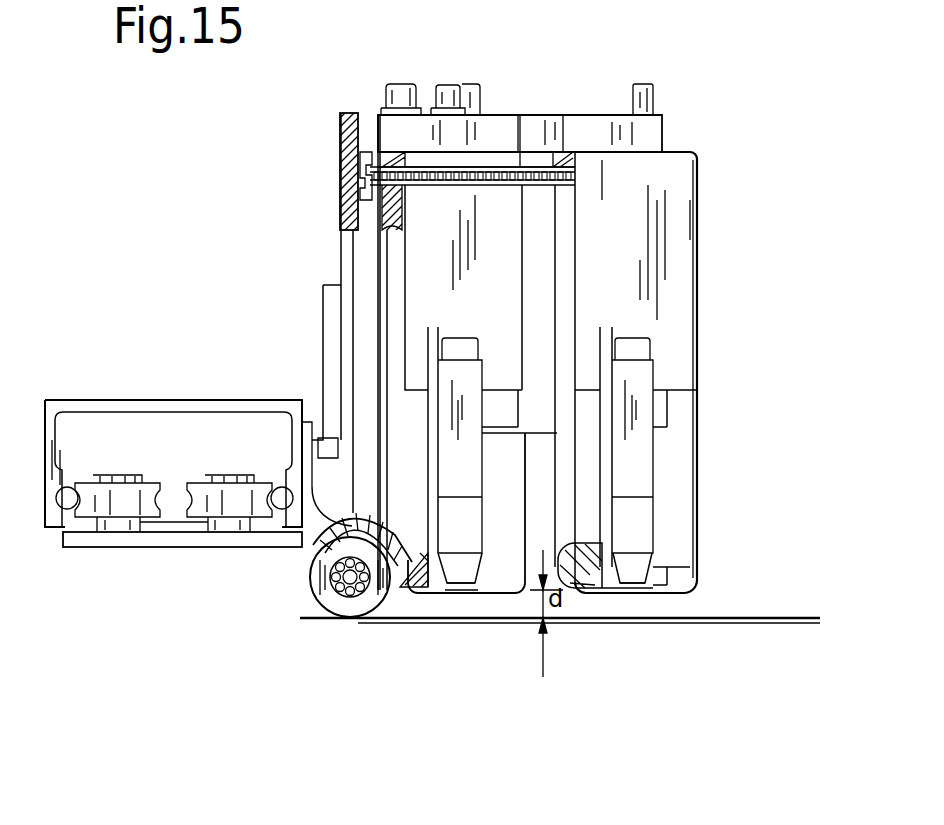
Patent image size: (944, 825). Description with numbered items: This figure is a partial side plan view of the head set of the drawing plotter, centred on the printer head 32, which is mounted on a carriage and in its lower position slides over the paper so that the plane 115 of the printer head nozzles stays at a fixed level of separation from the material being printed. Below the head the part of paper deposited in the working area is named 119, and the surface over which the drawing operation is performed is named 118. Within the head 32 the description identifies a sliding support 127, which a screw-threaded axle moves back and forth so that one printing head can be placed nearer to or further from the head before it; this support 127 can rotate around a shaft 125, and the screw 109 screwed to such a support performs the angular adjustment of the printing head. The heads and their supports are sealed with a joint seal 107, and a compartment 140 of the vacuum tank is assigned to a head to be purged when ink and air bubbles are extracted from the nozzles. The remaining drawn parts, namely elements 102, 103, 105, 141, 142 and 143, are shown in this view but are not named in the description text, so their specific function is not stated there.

The head 32 is at (687, 133).
The guide rod 102 is at (428, 588).
The bearing block 103 is at (650, 594).
The support foot 105 is at (462, 590).
The joint seal 107 is at (400, 92).
The screw 109 is at (360, 180).
The plane of the printer head nozzles 115 is at (477, 594).
The drawing surface 118 is at (757, 616).
The paper in the working area 119 is at (583, 626).
The shaft 125 is at (458, 533).
The sliding support 127 is at (637, 470).
The compartment of the tank 140 is at (318, 582).
The guide wheel 141 is at (355, 582).
The roller carriage 142 is at (200, 402).
The base plate 143 is at (87, 540).